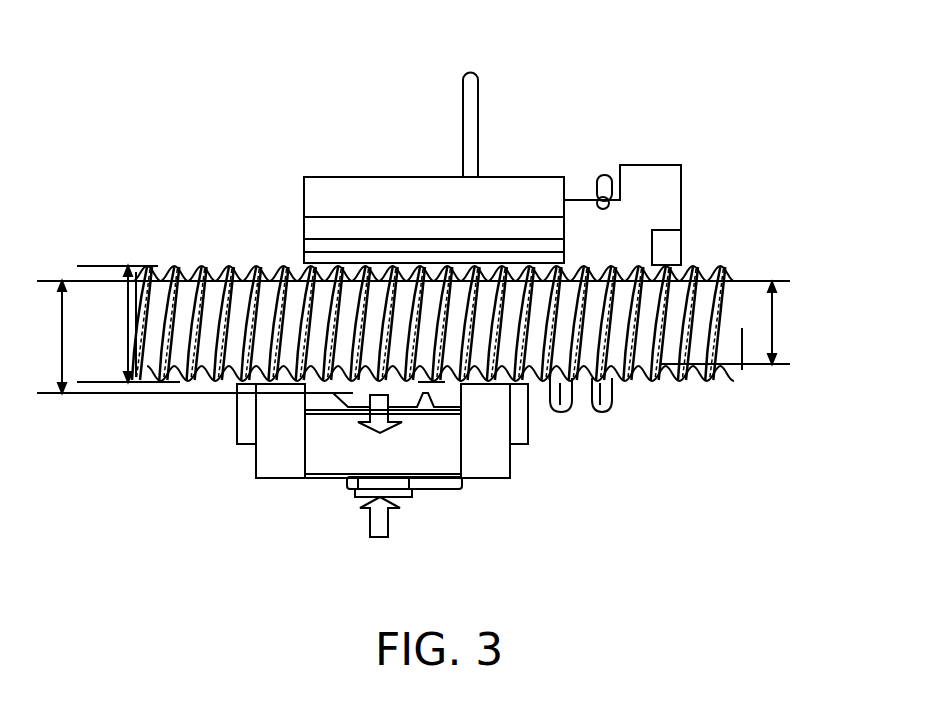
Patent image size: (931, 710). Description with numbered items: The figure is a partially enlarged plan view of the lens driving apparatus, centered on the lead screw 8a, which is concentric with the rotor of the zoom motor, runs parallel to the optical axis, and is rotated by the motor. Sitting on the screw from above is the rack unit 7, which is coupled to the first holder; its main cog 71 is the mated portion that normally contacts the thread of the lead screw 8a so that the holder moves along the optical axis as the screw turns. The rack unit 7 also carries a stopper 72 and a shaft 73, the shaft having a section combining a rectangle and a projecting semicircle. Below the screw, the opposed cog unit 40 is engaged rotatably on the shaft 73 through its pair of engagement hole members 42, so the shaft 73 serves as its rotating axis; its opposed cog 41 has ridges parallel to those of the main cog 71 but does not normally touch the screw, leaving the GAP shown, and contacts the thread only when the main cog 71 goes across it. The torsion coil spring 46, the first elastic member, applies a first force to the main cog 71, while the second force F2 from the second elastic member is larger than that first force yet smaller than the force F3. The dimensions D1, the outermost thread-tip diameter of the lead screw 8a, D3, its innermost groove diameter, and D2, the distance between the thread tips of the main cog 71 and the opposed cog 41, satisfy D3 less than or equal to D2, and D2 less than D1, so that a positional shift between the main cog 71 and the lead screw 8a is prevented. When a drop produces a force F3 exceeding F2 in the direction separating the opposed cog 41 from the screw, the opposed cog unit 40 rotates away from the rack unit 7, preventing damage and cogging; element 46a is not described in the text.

The rack unit 7 is at (497, 188).
The main cog 71 is at (377, 263).
The stopper 72 is at (575, 197).
The bracket 46a is at (612, 204).
The lead screw 8a is at (705, 307).
The torsion coil spring 46 is at (607, 400).
The shaft 73 is at (245, 425).
The opposed cog 41 is at (308, 458).
The engagement hole members 42 is at (287, 470).
The opposed cog unit 40 is at (343, 435).
The gap GAP is at (430, 385).
The second force F2 is at (380, 538).
The force F3 is at (387, 432).
The outermost diameter of the lead screw D1 is at (128, 324).
The distance between thread tips D2 is at (401, 337).
The innermost diameter of the lead screw D3 is at (739, 323).